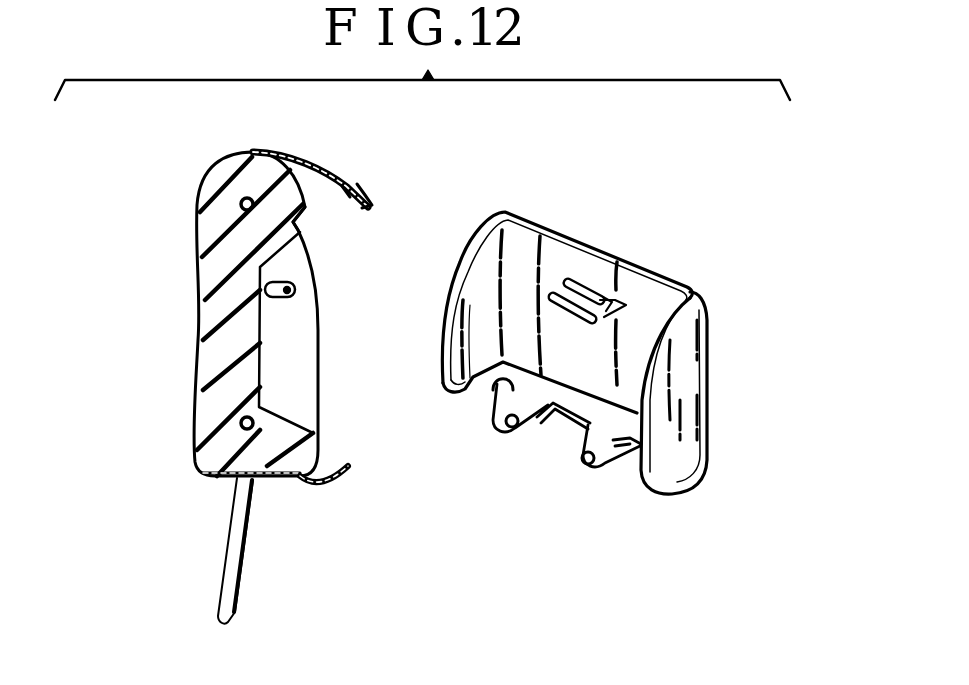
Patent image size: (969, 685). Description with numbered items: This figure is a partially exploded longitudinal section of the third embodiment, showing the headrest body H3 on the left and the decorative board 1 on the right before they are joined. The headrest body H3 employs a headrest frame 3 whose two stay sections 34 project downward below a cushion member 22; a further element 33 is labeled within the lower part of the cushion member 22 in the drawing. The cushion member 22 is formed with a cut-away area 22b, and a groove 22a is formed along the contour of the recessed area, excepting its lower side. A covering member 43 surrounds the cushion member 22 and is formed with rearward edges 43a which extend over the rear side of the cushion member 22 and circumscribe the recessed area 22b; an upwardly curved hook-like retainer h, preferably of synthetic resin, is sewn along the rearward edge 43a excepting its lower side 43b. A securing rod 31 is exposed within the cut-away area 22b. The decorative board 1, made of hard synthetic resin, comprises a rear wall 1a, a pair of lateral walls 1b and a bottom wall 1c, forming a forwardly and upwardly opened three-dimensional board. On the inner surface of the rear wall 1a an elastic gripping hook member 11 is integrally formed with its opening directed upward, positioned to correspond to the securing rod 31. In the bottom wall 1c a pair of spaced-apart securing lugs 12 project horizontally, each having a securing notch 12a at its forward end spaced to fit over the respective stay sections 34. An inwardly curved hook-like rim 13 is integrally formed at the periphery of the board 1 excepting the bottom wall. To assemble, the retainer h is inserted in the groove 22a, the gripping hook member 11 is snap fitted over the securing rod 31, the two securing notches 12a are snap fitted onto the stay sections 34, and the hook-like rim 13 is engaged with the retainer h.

The decorative board 1 is at (673, 268).
The rear wall 1a is at (527, 248).
The lateral walls 1b is at (483, 265).
The bottom wall 1c is at (503, 378).
The headrest frame 3 is at (249, 198).
The gripping hook member 11 is at (597, 275).
The securing lugs 12 is at (530, 412).
The securing notch 12a is at (510, 432).
The hook-like rim 13 is at (562, 227).
The cushion member 22 is at (210, 263).
The groove 22a is at (300, 223).
The cut-away area 22b is at (300, 370).
The securing rod 31 is at (295, 290).
The hole 33 is at (241, 425).
The stay sections 34 is at (230, 542).
The covering member 43 is at (200, 332).
The rearward edges 43a is at (332, 175).
The lower side 43b is at (334, 482).
The hook-like retainer h is at (367, 207).
The headrest body H3 is at (195, 175).